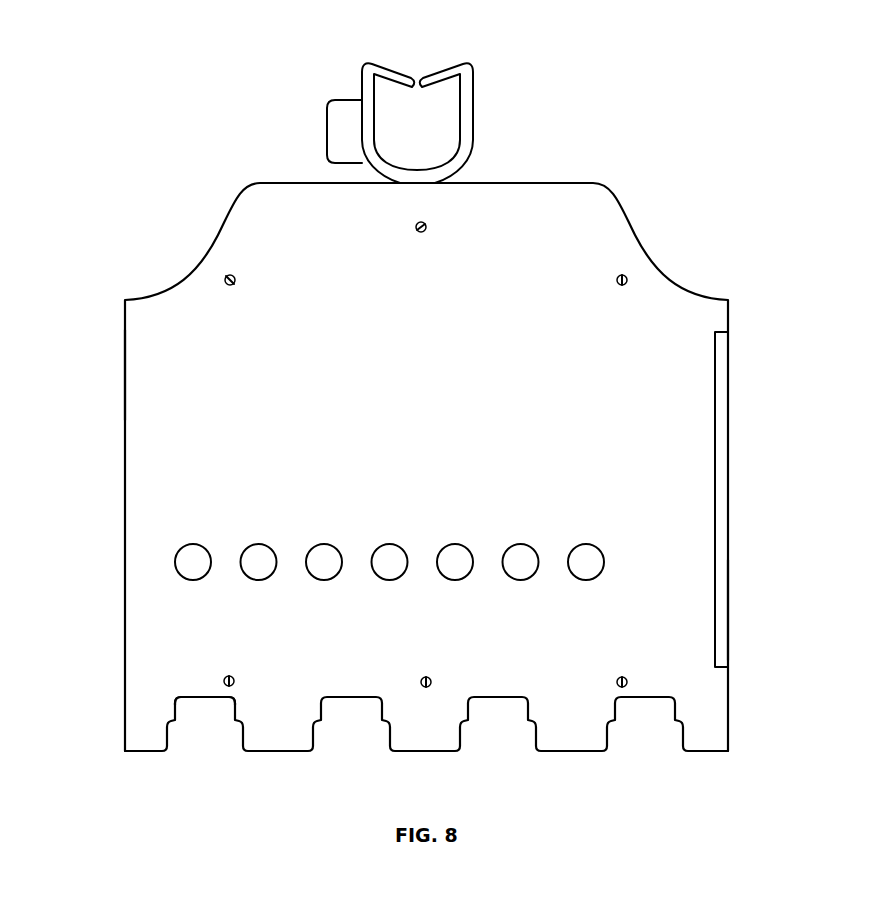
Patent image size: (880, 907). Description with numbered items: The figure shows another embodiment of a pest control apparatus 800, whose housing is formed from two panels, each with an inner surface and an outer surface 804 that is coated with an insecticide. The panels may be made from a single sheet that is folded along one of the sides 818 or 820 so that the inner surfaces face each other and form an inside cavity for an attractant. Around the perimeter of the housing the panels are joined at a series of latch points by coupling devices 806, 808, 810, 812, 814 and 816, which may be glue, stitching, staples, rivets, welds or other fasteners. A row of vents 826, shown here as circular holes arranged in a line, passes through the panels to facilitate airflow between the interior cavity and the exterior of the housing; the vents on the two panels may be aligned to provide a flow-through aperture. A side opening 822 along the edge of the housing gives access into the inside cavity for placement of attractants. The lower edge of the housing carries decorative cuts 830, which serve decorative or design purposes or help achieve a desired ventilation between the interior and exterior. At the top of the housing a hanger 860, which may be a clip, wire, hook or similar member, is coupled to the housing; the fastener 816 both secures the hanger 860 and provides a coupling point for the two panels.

The pest control apparatus 800 is at (141, 30).
The hanger 860 is at (367, 84).
The fastener 816 is at (427, 227).
The coupling device 808 is at (225, 279).
The coupling device 810 is at (628, 279).
The side 818 is at (124, 368).
The side 820 is at (730, 368).
The side opening 822 is at (722, 450).
The outer surface 804 is at (690, 607).
The coupling device 806 is at (628, 682).
The vents 826 is at (236, 577).
The coupling device 814 is at (223, 681).
The decorative cuts 830 is at (194, 714).
The coupling device 812 is at (426, 688).